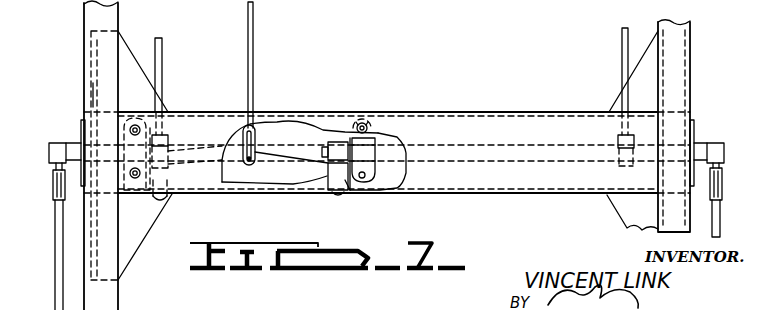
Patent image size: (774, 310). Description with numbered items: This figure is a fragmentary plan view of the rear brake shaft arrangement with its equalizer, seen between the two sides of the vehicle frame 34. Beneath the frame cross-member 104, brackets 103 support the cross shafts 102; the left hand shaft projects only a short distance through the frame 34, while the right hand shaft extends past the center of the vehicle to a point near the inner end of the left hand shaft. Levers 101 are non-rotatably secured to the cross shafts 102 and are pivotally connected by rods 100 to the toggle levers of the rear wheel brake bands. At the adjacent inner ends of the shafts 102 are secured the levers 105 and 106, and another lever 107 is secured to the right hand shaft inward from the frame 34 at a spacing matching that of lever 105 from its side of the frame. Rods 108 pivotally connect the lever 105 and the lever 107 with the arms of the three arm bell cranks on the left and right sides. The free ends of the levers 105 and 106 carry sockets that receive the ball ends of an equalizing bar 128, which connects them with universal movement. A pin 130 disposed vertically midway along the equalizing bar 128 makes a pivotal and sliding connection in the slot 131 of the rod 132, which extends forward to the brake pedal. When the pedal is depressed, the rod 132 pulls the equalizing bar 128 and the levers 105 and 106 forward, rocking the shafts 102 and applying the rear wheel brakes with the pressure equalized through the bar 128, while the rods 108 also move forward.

The frame 34 is at (85, 30).
The rods 100 is at (55, 275).
The levers 101 is at (68, 143).
The cross shafts 102 is at (49, 153).
The brackets 103 is at (381, 190).
The frame cross-member 104 is at (527, 111).
The lever 105 is at (163, 144).
The lever 106 is at (333, 137).
The lever 107 is at (624, 167).
The rods 108 is at (162, 62).
The equalizing bar 128 is at (311, 172).
The pin 130 is at (248, 166).
The slot 131 is at (255, 138).
The rod 132 is at (254, 20).